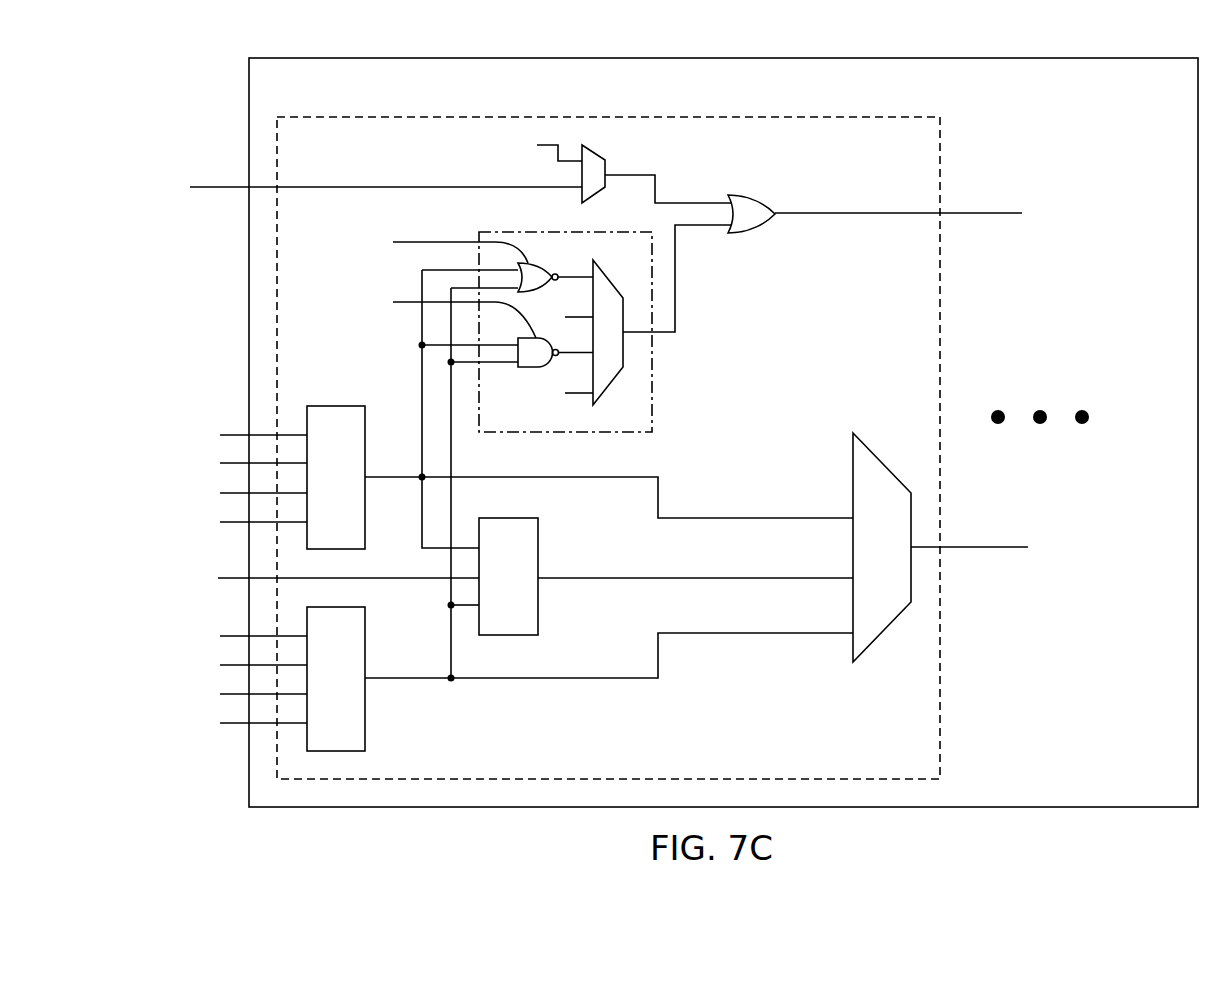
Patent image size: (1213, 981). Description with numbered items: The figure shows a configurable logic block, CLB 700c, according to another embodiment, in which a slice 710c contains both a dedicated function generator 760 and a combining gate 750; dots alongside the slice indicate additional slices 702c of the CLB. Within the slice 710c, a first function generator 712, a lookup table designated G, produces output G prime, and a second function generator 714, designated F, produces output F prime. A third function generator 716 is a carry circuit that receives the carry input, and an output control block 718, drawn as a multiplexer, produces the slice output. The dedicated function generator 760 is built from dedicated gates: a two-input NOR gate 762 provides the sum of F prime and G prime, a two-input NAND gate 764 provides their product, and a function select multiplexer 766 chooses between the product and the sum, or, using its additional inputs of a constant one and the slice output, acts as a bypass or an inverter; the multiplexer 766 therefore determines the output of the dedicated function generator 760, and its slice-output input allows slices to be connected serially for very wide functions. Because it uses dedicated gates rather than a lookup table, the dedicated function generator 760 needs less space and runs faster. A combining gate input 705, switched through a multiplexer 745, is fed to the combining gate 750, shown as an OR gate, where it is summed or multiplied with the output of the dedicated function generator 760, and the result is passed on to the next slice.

The CLB 700c is at (622, 58).
The slice 710c is at (448, 117).
The combining gate input 705 is at (225, 187).
The multiplexer 745 is at (598, 153).
The combining gate 750 is at (760, 198).
The dedicated function generator 760 is at (618, 339).
The two-input NOR gate 762 is at (436, 249).
The two-input NAND gate 764 is at (440, 316).
The function select multiplexer 766 is at (617, 375).
The first function generator 712 is at (524, 477).
The second function generator 714 is at (524, 679).
The third function generator 716 is at (472, 576).
The output control block 718 is at (940, 547).
The additional slices 702c is at (1043, 414).